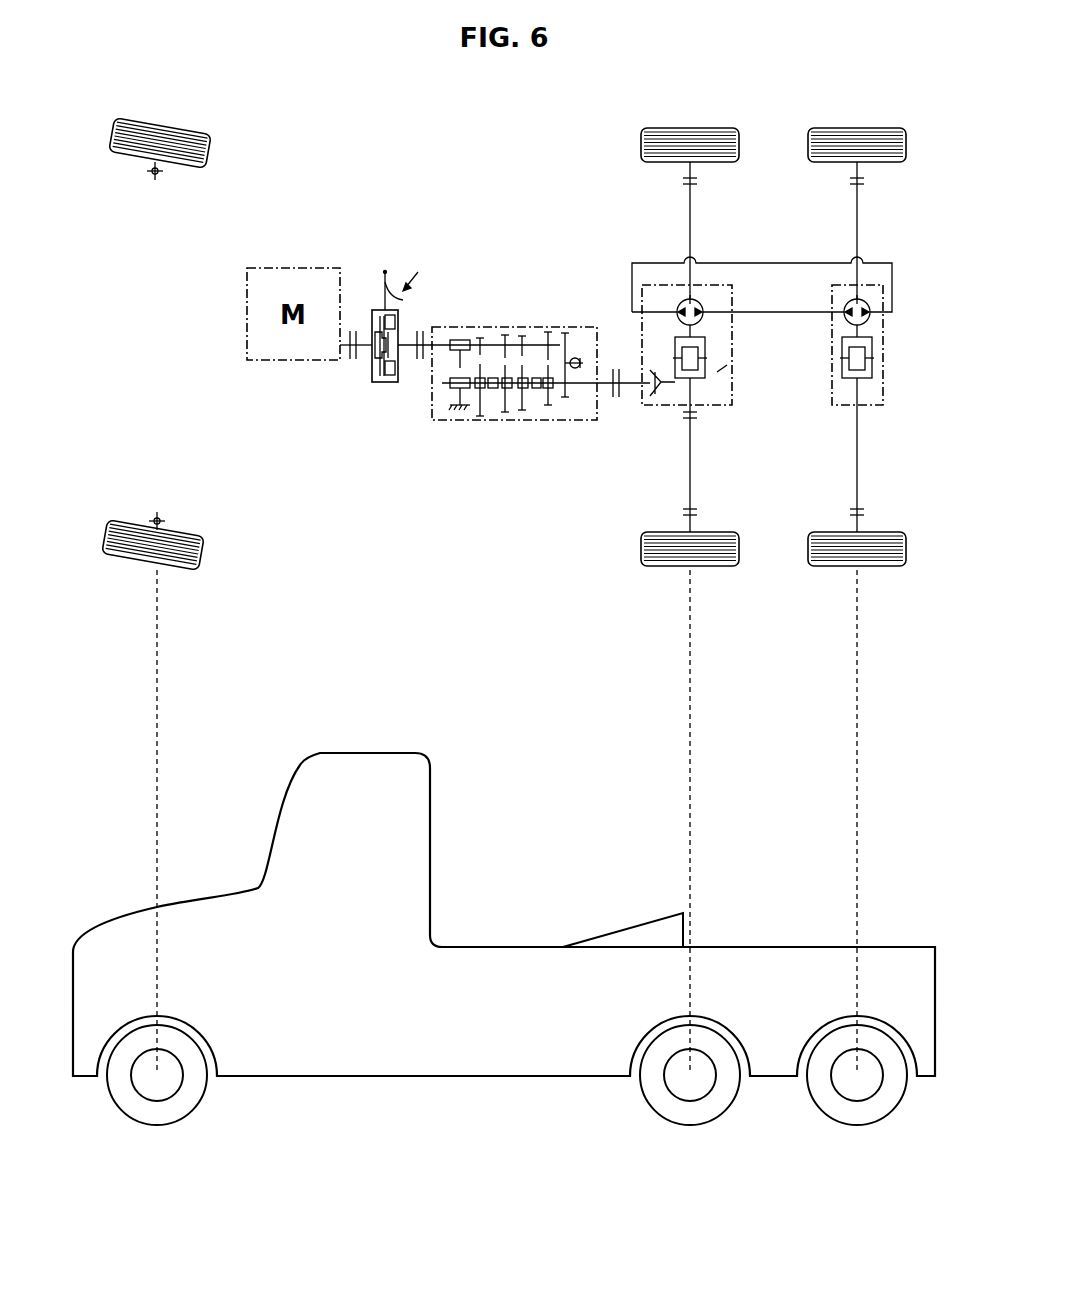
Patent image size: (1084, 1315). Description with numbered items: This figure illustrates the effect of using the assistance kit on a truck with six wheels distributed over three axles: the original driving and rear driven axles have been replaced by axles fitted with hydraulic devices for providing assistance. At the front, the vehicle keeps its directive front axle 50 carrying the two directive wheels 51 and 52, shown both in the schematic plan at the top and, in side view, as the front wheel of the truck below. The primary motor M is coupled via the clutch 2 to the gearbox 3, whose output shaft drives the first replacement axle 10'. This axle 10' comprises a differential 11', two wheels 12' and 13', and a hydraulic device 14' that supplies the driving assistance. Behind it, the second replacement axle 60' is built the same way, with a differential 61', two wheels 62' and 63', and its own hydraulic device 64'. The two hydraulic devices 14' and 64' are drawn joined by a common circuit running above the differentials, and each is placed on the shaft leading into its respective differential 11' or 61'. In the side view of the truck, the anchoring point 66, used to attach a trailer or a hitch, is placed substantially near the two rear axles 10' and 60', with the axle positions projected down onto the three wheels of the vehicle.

The directive front axle 50 is at (157, 627).
The directive wheel 51 is at (190, 155).
The directive wheel 52 is at (176, 555).
The clutch 2 is at (362, 374).
The gearbox 3 is at (422, 386).
The axle 10' is at (676, 627).
The differential 11' is at (676, 345).
The wheel 12' is at (692, 169).
The wheel 13' is at (693, 572).
The hydraulic device 14' is at (638, 348).
The axle 60' is at (845, 627).
The differential 61' is at (845, 346).
The wheel 62' is at (859, 169).
The wheel 63' is at (859, 572).
The hydraulic device 64' is at (815, 350).
The anchoring point 66 is at (650, 932).